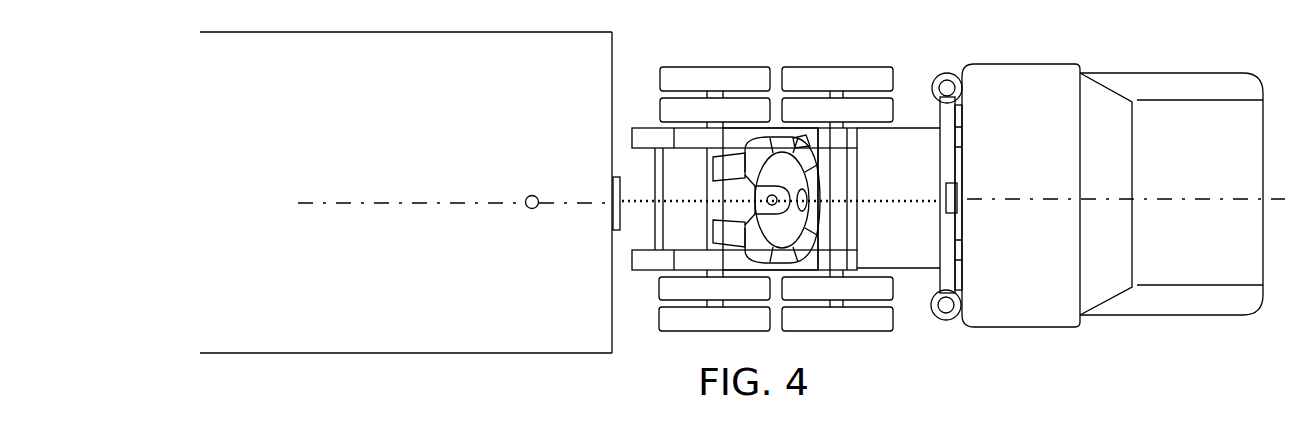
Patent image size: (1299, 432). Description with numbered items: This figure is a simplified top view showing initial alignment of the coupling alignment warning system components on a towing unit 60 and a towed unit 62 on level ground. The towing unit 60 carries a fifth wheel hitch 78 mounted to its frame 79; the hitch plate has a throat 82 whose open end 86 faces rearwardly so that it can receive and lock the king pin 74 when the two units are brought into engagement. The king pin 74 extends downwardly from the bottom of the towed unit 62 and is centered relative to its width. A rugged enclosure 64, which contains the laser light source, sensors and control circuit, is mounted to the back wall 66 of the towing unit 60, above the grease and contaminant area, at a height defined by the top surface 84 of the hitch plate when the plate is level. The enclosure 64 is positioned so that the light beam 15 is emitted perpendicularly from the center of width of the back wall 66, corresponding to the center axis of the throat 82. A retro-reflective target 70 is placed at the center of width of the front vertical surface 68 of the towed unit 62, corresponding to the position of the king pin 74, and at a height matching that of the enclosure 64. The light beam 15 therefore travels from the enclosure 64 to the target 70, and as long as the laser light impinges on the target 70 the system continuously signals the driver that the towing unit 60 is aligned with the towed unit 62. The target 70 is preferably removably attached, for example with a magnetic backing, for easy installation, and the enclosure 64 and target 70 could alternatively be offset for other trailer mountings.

The light beam 15 is at (637, 193).
The towing unit 60 is at (1033, 64).
The towed unit 62 is at (487, 35).
The rugged enclosure 64 is at (958, 193).
The back wall 66 is at (938, 86).
The front vertical surface 68 is at (615, 63).
The retro-reflective target 70 is at (613, 180).
The king pin 74 is at (527, 197).
The fifth wheel hitch 78 is at (802, 136).
The frame 79 is at (918, 260).
The throat 82 is at (725, 197).
The top surface 84 is at (772, 137).
The open end 86 is at (717, 233).